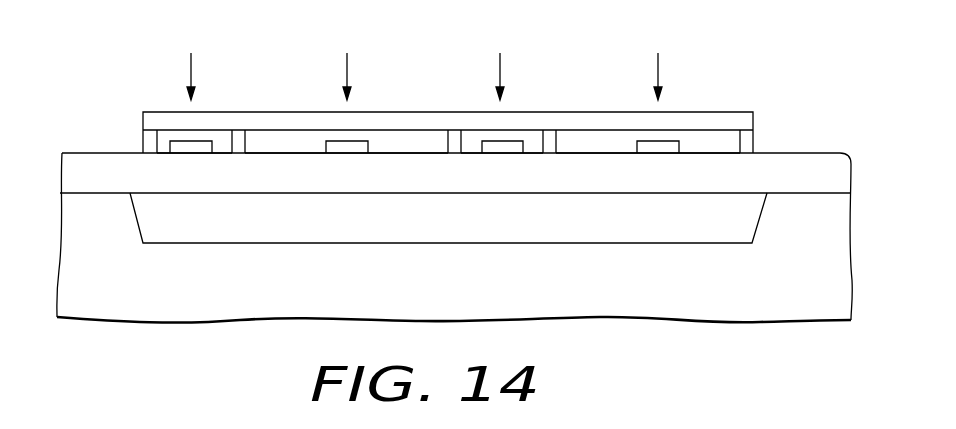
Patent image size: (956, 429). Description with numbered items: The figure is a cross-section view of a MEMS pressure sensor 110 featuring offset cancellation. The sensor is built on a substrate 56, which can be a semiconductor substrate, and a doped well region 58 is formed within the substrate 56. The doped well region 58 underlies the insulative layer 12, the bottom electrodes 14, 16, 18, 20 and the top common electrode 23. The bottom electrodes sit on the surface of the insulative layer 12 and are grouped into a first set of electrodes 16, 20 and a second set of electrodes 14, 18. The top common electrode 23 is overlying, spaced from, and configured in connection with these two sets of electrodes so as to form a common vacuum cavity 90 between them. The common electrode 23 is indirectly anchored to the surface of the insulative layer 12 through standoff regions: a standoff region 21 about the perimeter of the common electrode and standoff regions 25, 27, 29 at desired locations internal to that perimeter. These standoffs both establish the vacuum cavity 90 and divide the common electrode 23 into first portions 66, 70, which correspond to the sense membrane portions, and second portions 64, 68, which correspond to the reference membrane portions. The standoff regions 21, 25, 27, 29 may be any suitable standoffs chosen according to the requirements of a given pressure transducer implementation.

The MEMS pressure sensor 110 is at (787, 37).
The insulative layer 12 is at (819, 187).
The bottom electrode 14 is at (193, 148).
The bottom electrode 16 is at (348, 148).
The bottom electrode 18 is at (506, 148).
The bottom electrode 20 is at (661, 148).
The standoff region 21 is at (148, 148).
The top common electrode 23 is at (723, 118).
The standoff region 25 is at (242, 142).
The standoff region 27 is at (447, 145).
The standoff region 29 is at (558, 143).
The substrate 56 is at (672, 287).
The doped well region 58 is at (522, 228).
The second portion 64 is at (191, 65).
The first portion 66 is at (347, 65).
The second portion 68 is at (500, 65).
The first portion 70 is at (658, 65).
The common vacuum cavity 90 is at (162, 148).